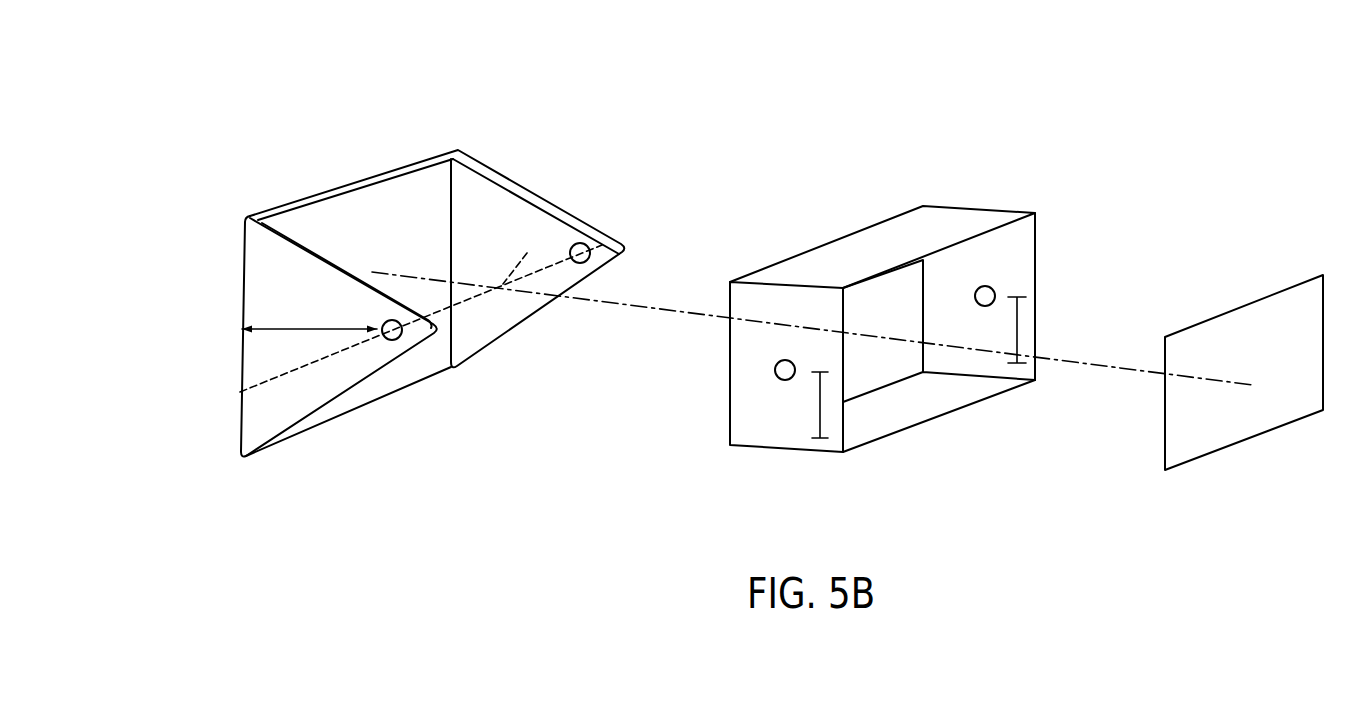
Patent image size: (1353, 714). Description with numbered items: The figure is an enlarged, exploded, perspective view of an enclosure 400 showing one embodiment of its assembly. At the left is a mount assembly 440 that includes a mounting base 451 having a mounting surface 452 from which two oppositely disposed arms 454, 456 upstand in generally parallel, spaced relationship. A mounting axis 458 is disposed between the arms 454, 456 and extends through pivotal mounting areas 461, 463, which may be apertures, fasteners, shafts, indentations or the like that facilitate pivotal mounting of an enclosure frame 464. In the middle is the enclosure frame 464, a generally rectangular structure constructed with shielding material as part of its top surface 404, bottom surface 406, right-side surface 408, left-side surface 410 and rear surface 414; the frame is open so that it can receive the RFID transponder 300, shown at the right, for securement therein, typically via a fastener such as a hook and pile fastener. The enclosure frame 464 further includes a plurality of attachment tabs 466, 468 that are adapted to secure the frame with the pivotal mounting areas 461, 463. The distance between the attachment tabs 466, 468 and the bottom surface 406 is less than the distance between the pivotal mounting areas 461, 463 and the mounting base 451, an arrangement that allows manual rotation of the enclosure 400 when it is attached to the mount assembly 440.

The RFID transponder 300 is at (1303, 280).
The enclosure 400 is at (1035, 160).
The top surface 404 is at (898, 228).
The bottom surface 406 is at (893, 425).
The right-side surface 408 is at (1025, 250).
The left-side surface 410 is at (740, 327).
The rear surface 414 is at (886, 375).
The mount assembly 440 is at (535, 82).
The mounting base 451 is at (285, 199).
The mounting surface 452 is at (420, 175).
The arm 454 is at (527, 205).
The arm 456 is at (243, 430).
The mounting axis 458 is at (522, 256).
The pivotal mounting area 461 is at (578, 247).
The pivotal mounting area 463 is at (383, 340).
The enclosure frame 464 is at (766, 262).
The attachment tab 466 is at (775, 373).
The attachment tab 468 is at (997, 292).